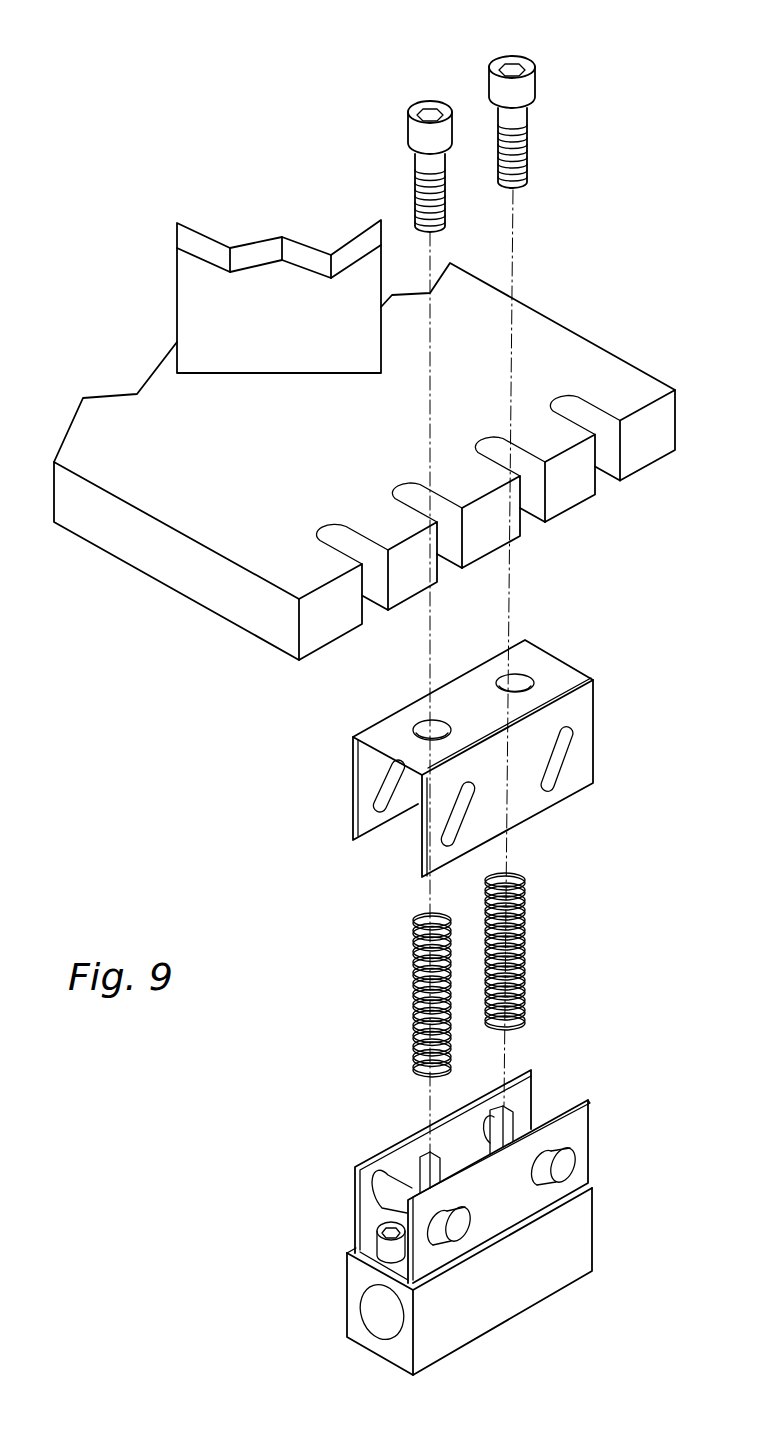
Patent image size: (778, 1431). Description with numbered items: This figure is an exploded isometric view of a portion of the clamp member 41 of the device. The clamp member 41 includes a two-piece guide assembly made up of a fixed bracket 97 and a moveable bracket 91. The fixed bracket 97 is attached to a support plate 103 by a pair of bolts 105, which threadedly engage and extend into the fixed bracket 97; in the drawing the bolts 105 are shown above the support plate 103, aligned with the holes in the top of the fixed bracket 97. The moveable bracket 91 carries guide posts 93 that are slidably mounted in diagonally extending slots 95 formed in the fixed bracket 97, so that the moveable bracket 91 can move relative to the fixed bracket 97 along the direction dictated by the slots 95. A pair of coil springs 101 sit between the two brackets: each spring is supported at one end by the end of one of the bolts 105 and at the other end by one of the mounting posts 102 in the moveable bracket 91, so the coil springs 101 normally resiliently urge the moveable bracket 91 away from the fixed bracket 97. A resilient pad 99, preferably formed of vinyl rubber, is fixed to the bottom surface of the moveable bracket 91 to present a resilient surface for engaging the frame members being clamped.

The clamp member 41 is at (414, 1208).
The moveable bracket 91 is at (373, 1207).
The guide posts 93 is at (463, 1225).
The diagonally extending slots 95 is at (385, 792).
The fixed bracket 97 is at (481, 749).
The resilient pad 99 is at (483, 1298).
The coil springs 101 is at (553, 792).
The mounting posts 102 is at (418, 1163).
The support plate 103 is at (222, 590).
The bolts 105 is at (427, 103).